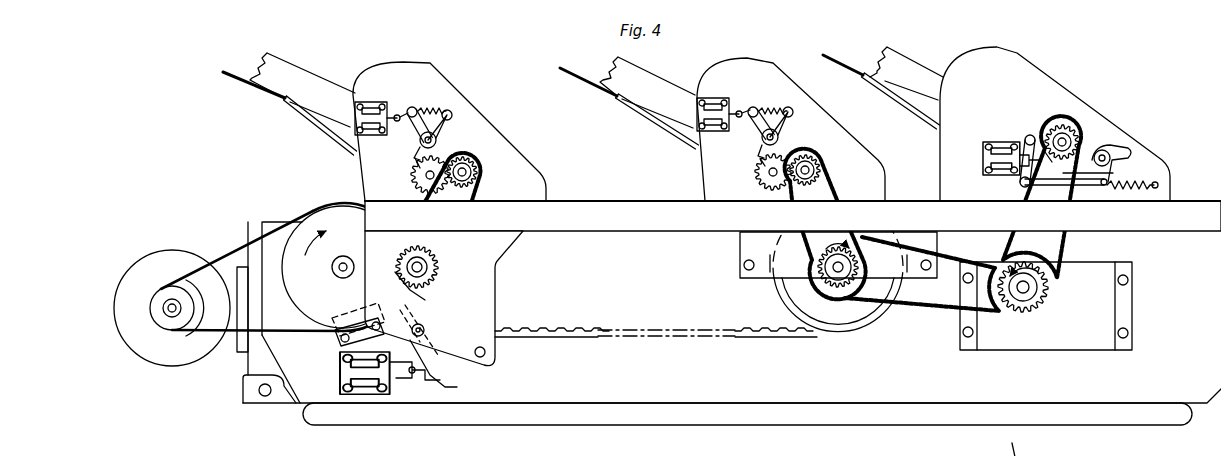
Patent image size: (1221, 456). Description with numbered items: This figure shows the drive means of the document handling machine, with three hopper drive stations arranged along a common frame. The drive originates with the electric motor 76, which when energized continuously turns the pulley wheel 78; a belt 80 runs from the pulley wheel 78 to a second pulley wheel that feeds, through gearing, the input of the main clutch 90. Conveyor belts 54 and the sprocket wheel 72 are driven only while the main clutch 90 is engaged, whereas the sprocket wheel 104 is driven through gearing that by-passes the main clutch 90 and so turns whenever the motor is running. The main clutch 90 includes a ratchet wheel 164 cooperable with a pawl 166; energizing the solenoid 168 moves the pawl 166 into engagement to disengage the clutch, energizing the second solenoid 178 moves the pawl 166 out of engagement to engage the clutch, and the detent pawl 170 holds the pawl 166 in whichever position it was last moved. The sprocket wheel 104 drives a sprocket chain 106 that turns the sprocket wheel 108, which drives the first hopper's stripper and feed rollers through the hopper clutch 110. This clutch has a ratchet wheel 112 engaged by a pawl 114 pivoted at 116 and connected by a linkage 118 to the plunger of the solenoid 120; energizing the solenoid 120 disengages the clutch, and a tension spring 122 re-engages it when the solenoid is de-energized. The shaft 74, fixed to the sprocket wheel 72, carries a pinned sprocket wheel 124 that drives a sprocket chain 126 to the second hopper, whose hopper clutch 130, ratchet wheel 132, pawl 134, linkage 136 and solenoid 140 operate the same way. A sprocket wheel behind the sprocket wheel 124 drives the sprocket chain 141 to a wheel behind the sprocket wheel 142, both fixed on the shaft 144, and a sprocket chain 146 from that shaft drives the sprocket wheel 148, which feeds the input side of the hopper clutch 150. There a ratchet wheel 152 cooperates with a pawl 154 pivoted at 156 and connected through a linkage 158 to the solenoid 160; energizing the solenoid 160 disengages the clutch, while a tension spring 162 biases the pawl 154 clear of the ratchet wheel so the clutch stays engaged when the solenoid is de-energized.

The conveyor belts 54 is at (765, 337).
The sprocket wheel 72 is at (857, 333).
The shaft 74 is at (838, 272).
The electric motor 76 is at (153, 262).
The pulley wheel 78 is at (165, 323).
The belt 80 is at (233, 253).
The main clutch 90 is at (376, 252).
The sprocket wheel 104 is at (430, 288).
The sprocket chain 106 is at (457, 252).
The sprocket wheel 108 is at (480, 188).
The hopper clutch 110 is at (410, 185).
The ratchet wheel 112 is at (415, 170).
The pawl 114 is at (413, 146).
The pivot 116 is at (450, 130).
The linkage 118 is at (409, 104).
The solenoid 120 is at (374, 104).
The tension spring 122 is at (432, 108).
The sprocket wheel 124 is at (902, 265).
The sprocket chain 126 is at (838, 255).
The hopper clutch 130 is at (754, 183).
The ratchet wheel 132 is at (760, 168).
The pawl 134 is at (758, 143).
The linkage 136 is at (753, 107).
The solenoid 140 is at (700, 98).
The sprocket chain 141 is at (932, 313).
The sprocket wheel 142 is at (1030, 310).
The shaft 144 is at (1025, 290).
The sprocket chain 146 is at (1068, 248).
The sprocket wheel 148 is at (1060, 125).
The hopper clutch 150 is at (1080, 128).
The ratchet wheel 152 is at (1035, 130).
The pawl 154 is at (1092, 150).
The pivot 156 is at (1107, 152).
The linkage 158 is at (1015, 180).
The solenoid 160 is at (985, 142).
The tension spring 162 is at (1125, 185).
The ratchet wheel 164 is at (433, 270).
The pawl 166 is at (425, 348).
The solenoid 168 is at (340, 372).
The detent pawl 170 is at (460, 375).
The second solenoid 178 is at (337, 340).